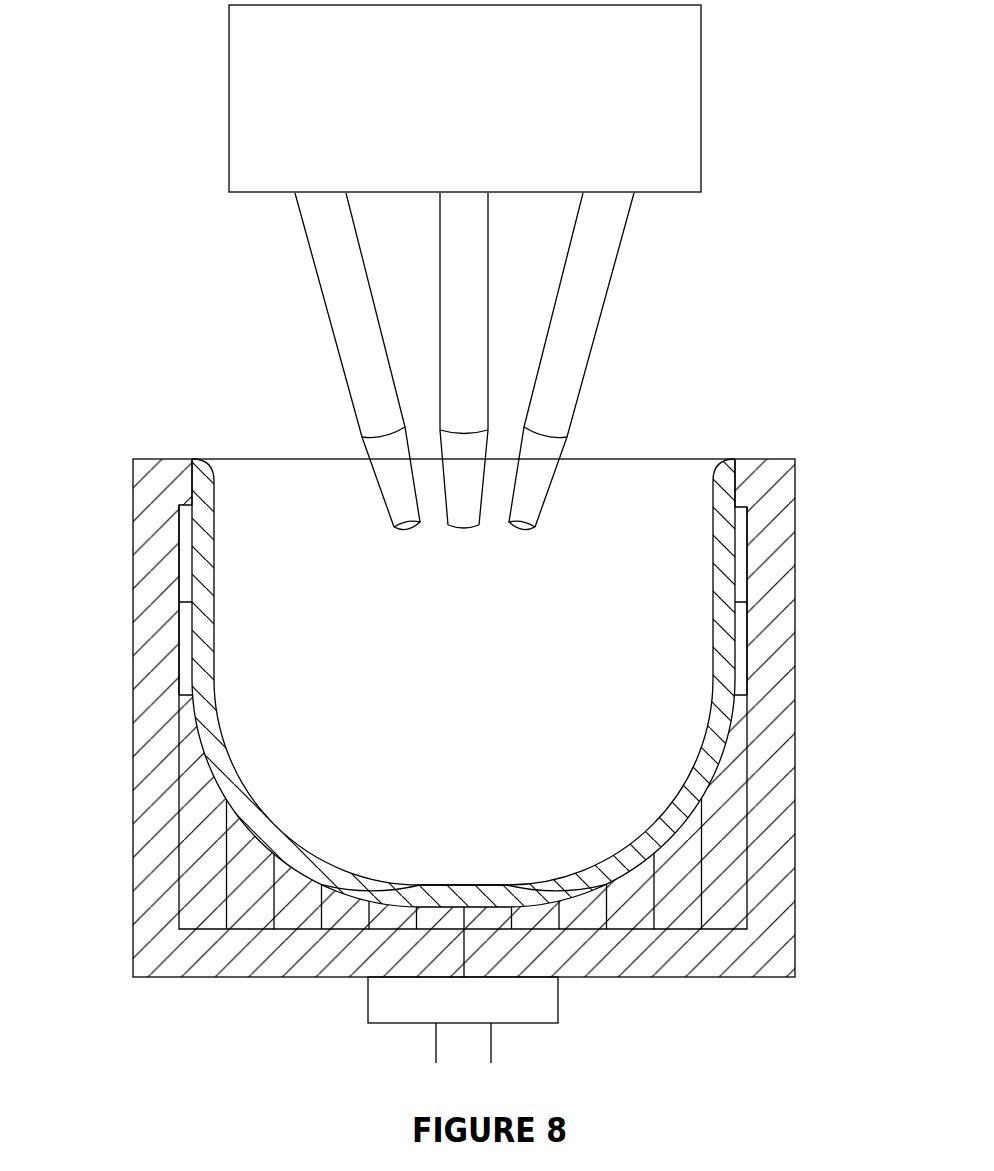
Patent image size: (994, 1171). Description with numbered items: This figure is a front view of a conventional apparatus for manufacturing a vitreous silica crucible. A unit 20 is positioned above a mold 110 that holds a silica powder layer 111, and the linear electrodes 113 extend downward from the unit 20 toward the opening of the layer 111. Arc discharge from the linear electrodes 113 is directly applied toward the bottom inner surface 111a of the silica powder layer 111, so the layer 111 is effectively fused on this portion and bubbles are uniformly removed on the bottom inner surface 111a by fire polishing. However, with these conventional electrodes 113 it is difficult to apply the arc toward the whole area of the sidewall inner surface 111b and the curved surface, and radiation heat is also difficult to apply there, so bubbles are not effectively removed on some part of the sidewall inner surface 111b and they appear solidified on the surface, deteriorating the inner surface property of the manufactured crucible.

The material supply unit 20 is at (703, 95).
The linear electrodes 113 is at (322, 302).
The crucible 110 is at (797, 950).
The silica powder layer 111 is at (203, 572).
The sidewall inner surface 111b is at (205, 648).
The bottom inner surface 111a is at (517, 902).